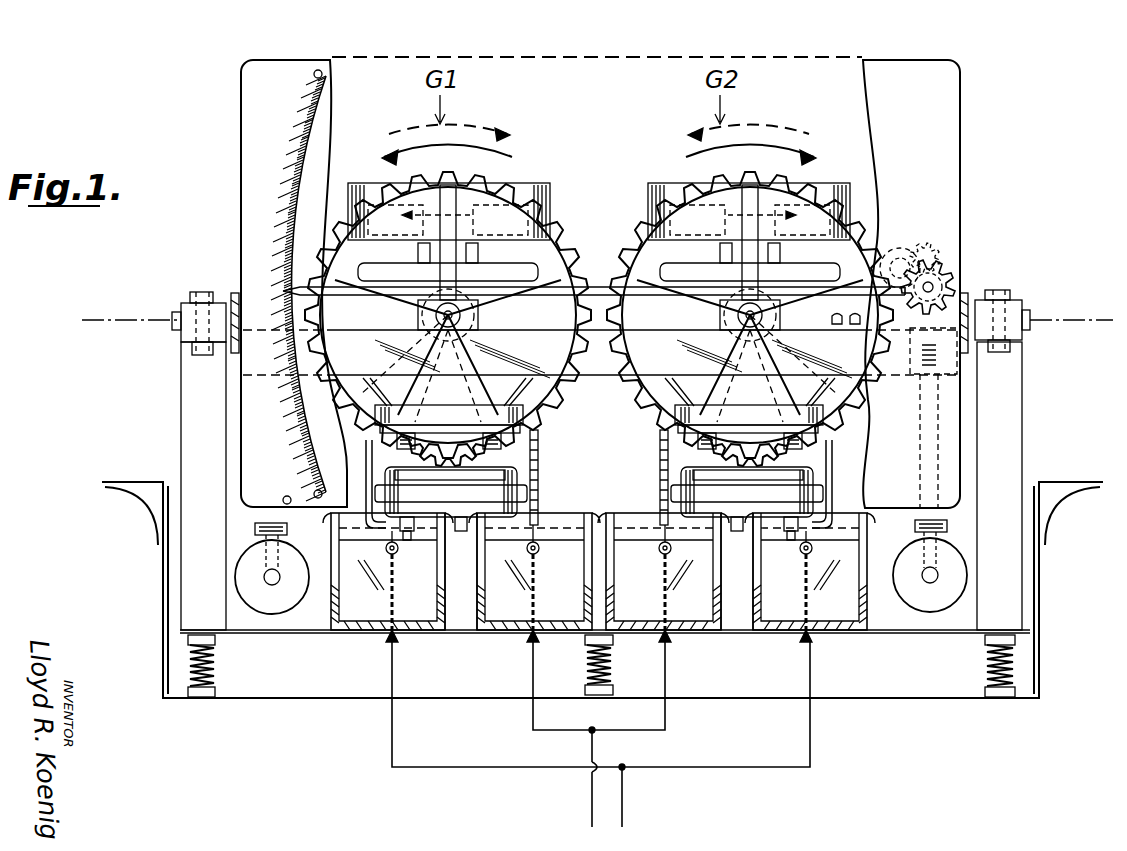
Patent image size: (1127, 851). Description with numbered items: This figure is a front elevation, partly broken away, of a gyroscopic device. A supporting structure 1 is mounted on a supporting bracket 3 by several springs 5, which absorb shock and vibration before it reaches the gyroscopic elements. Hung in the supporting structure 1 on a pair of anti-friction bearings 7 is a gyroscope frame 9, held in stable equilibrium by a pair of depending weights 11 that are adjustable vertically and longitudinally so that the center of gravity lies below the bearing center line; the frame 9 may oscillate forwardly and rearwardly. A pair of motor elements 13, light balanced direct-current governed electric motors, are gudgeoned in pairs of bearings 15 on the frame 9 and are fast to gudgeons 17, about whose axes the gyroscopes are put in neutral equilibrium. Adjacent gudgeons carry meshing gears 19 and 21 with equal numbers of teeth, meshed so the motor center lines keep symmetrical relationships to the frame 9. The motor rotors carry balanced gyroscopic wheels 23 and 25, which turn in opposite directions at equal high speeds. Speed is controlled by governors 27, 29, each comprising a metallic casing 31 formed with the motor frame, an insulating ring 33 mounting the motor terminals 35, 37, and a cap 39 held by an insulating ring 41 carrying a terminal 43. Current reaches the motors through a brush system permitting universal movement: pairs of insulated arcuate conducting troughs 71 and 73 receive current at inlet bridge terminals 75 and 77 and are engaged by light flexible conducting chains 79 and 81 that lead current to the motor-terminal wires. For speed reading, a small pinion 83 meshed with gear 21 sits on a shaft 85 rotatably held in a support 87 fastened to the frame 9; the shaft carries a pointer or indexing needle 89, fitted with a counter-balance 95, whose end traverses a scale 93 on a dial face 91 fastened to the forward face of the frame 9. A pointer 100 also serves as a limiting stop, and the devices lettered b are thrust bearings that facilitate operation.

The supporting structure 1 is at (245, 634).
The supporting bracket 3 is at (168, 700).
The springs 5 is at (218, 690).
The anti-friction bearings 7 is at (190, 332).
The gyroscope frame 9 is at (601, 354).
The depending weights 11 is at (601, 567).
The motor elements 13 is at (599, 304).
The bearings 15 is at (418, 318).
The gudgeons 17 is at (422, 332).
The gear 19 is at (562, 222).
The gear 21 is at (640, 215).
The gyroscopic wheel 23 is at (546, 183).
The gyroscopic wheel 25 is at (655, 185).
The governor 27 is at (517, 478).
The governor 29 is at (681, 478).
The metallic casing 31 is at (599, 479).
The insulating ring 33 is at (462, 425).
The motor terminal 35 is at (398, 450).
The motor terminal 37 is at (500, 455).
The cap 39 is at (466, 528).
The insulating ring 41 is at (539, 492).
The terminal 43 is at (395, 553).
The insulated arcuate conducting troughs 71 is at (572, 512).
The insulated arcuate conducting troughs 73 is at (396, 640).
The inlet bridge terminal 75 is at (668, 728).
The inlet bridge terminal 77 is at (730, 768).
The flexible conducting chains 79 is at (536, 568).
The flexible conducting chains 81 is at (392, 605).
The pinion 83 is at (902, 248).
The shaft 85 is at (934, 245).
The support 87 is at (955, 287).
The pointer or indexing needle 89 is at (560, 296).
The dial face 91 is at (570, 284).
The scale 93 is at (305, 150).
The counter-balance 95 is at (966, 268).
The pointer 100 is at (840, 328).
The thrust bearings b is at (232, 295).